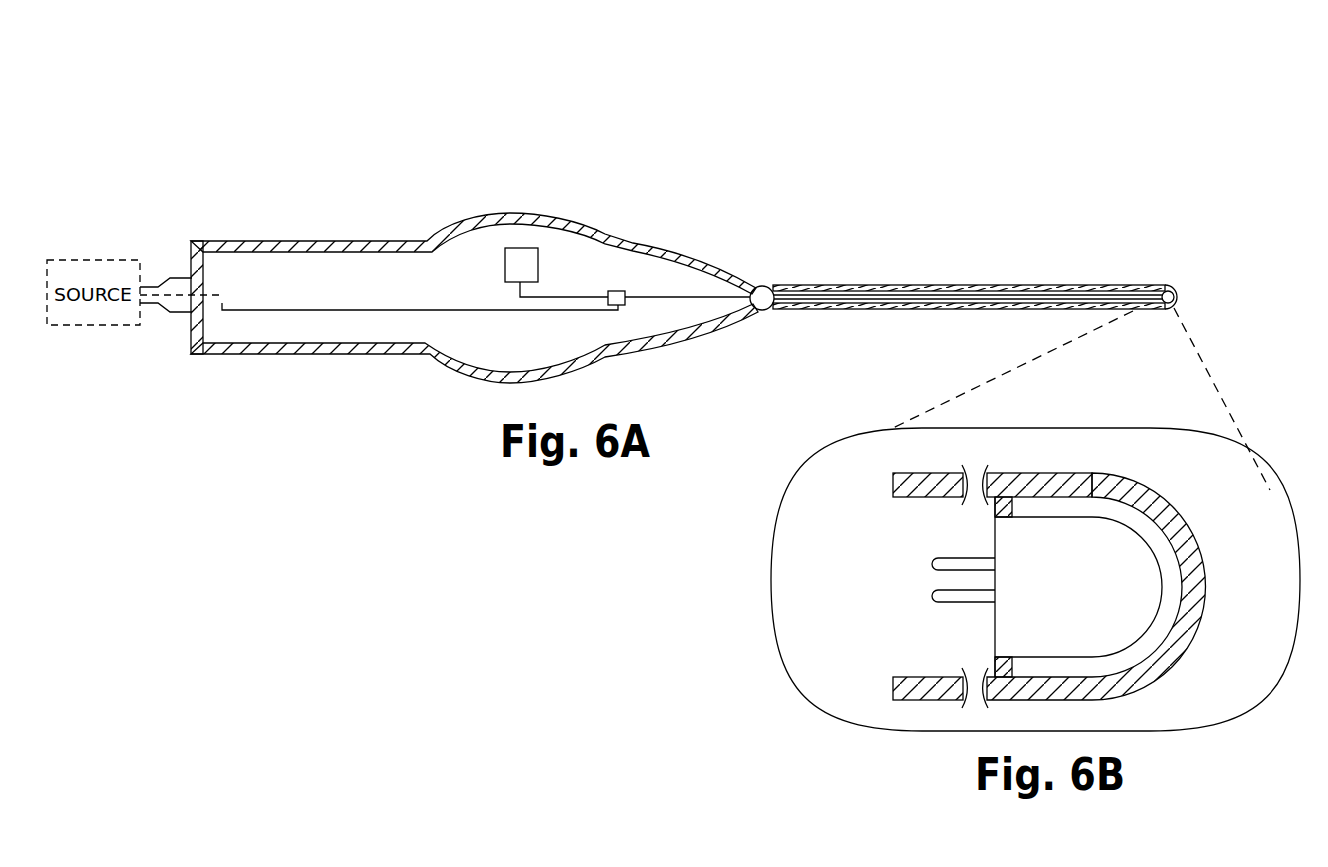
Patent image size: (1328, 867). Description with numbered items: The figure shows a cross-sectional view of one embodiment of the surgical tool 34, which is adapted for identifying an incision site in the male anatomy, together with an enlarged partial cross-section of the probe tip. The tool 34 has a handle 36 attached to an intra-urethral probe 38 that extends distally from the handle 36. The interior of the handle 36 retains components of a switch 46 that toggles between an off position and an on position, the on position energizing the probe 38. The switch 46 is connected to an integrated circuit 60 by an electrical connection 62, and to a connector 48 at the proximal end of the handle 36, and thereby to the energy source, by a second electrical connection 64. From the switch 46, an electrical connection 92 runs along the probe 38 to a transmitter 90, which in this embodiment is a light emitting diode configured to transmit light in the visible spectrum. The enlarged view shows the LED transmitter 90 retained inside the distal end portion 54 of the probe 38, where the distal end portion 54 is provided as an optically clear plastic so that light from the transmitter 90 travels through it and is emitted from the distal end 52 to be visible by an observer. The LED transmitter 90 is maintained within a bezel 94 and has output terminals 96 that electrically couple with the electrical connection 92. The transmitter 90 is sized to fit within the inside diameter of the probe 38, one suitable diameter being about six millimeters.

In FIG. 6A, the surgical tool 34 is at (660, 149).
In FIG. 6A, the handle 36 is at (299, 241).
In FIG. 6A, the intra-urethral probe 38 is at (860, 286).
In FIG. 6B, the intra-urethral probe 38 is at (920, 473).
In FIG. 6A, the switch 46 is at (622, 291).
In FIG. 6A, the connector 48 is at (175, 313).
In FIG. 6B, the distal end 52 is at (1206, 582).
In FIG. 6B, the distal end portion 54 is at (1096, 473).
In FIG. 6A, the integrated circuit 60 is at (516, 262).
In FIG. 6A, the electrical connection 62 is at (568, 297).
In FIG. 6A, the second electrical connection 64 is at (375, 311).
In FIG. 6A, the transmitter 90 is at (1170, 285).
In FIG. 6B, the transmitter 90 is at (1043, 587).
In FIG. 6A, the electrical connection 92 is at (976, 290).
In FIG. 6B, the bezel 94 is at (1142, 542).
In FIG. 6B, the output terminals 96 is at (948, 603).